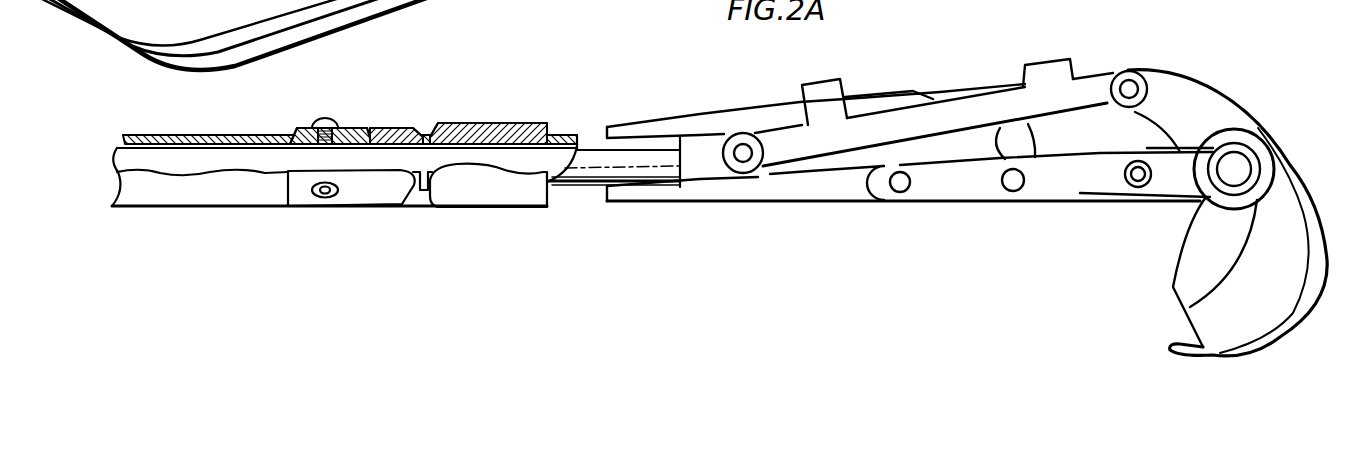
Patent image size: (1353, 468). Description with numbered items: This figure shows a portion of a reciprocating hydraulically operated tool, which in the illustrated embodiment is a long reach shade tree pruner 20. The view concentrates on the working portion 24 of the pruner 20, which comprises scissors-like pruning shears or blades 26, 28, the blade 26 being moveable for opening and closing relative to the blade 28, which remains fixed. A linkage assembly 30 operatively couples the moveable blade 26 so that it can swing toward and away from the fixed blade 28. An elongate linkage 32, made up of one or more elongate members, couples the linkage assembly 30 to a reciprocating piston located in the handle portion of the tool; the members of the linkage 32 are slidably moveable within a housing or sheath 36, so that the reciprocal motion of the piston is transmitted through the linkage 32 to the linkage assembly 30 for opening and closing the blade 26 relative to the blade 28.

The pruner 20 is at (653, 71).
The working portion 24 is at (789, 229).
The blade 26 is at (1182, 243).
The blade 28 is at (1310, 279).
The linkage assembly 30 is at (988, 73).
The elongate linkage 32 is at (588, 156).
The housing or sheath 36 is at (246, 136).